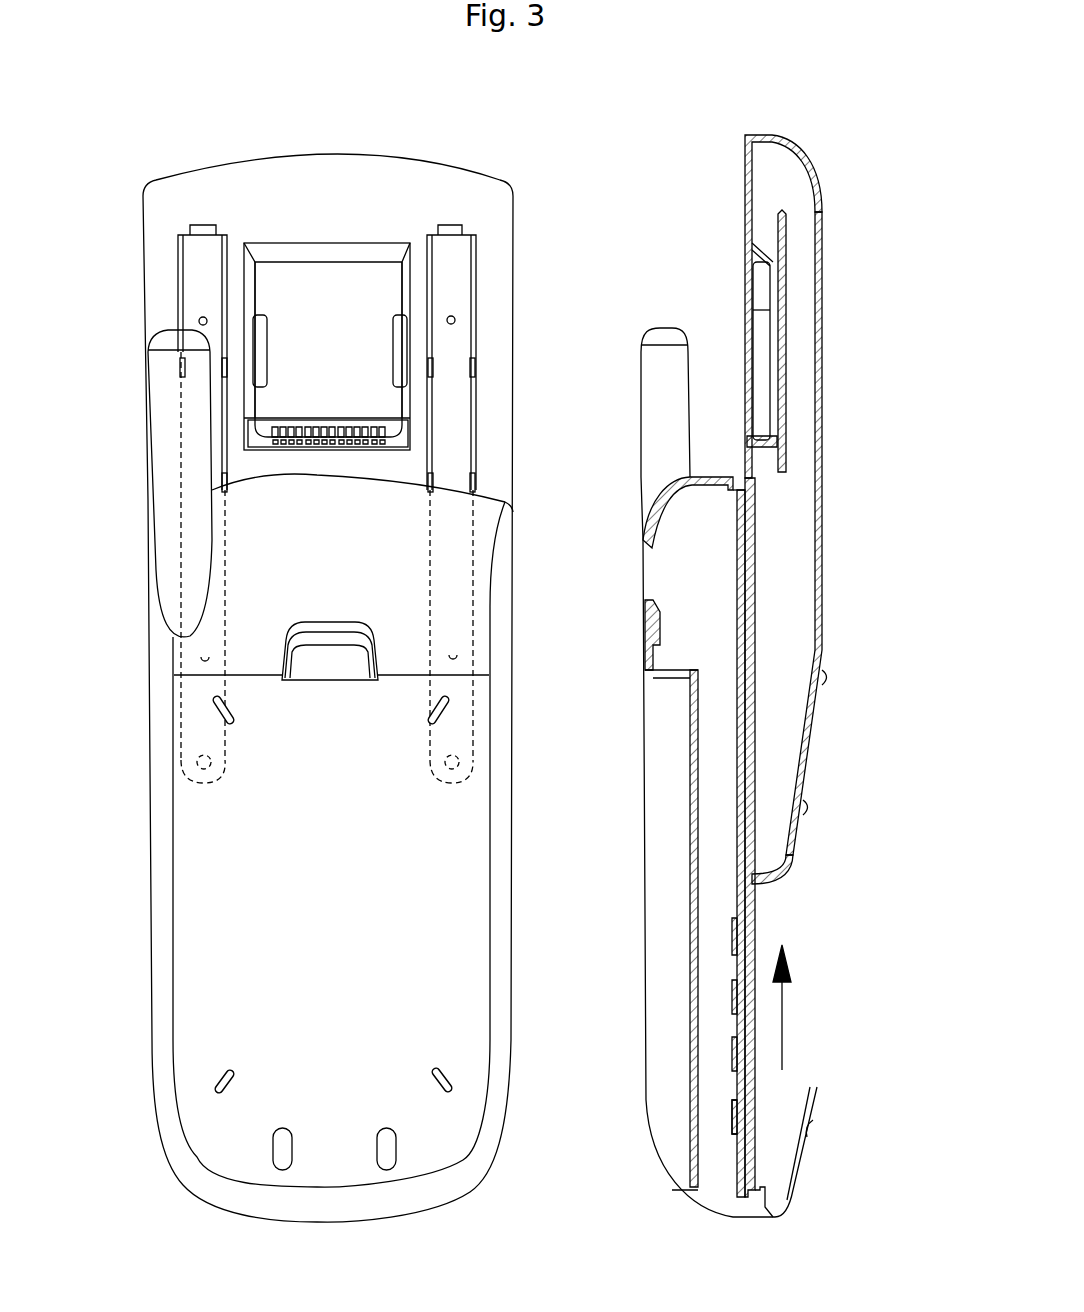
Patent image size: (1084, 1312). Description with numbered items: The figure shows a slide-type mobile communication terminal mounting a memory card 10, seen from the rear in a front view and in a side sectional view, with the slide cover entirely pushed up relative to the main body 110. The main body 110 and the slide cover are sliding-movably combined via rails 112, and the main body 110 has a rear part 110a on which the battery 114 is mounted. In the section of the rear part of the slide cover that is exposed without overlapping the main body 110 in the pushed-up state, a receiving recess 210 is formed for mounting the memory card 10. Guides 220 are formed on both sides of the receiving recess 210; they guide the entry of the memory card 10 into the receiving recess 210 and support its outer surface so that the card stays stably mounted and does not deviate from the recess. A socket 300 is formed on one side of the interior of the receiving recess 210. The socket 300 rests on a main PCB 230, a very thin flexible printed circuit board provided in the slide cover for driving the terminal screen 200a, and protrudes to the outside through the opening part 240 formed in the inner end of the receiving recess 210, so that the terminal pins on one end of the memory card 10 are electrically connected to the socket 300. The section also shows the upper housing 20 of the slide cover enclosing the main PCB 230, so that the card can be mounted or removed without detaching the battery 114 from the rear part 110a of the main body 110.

The memory card 10 is at (405, 287).
The second body (sliding cover) 20 is at (800, 163).
The main body 110 is at (498, 807).
The rear part 110a is at (691, 1012).
The rails 112 is at (190, 290).
The battery 114 is at (467, 900).
The terminal screen 200a is at (823, 448).
The receiving recess 210 is at (327, 253).
The guides 220 is at (268, 330).
The main PCB 230 is at (787, 238).
The opening part 240 is at (235, 412).
The socket 300 is at (405, 440).